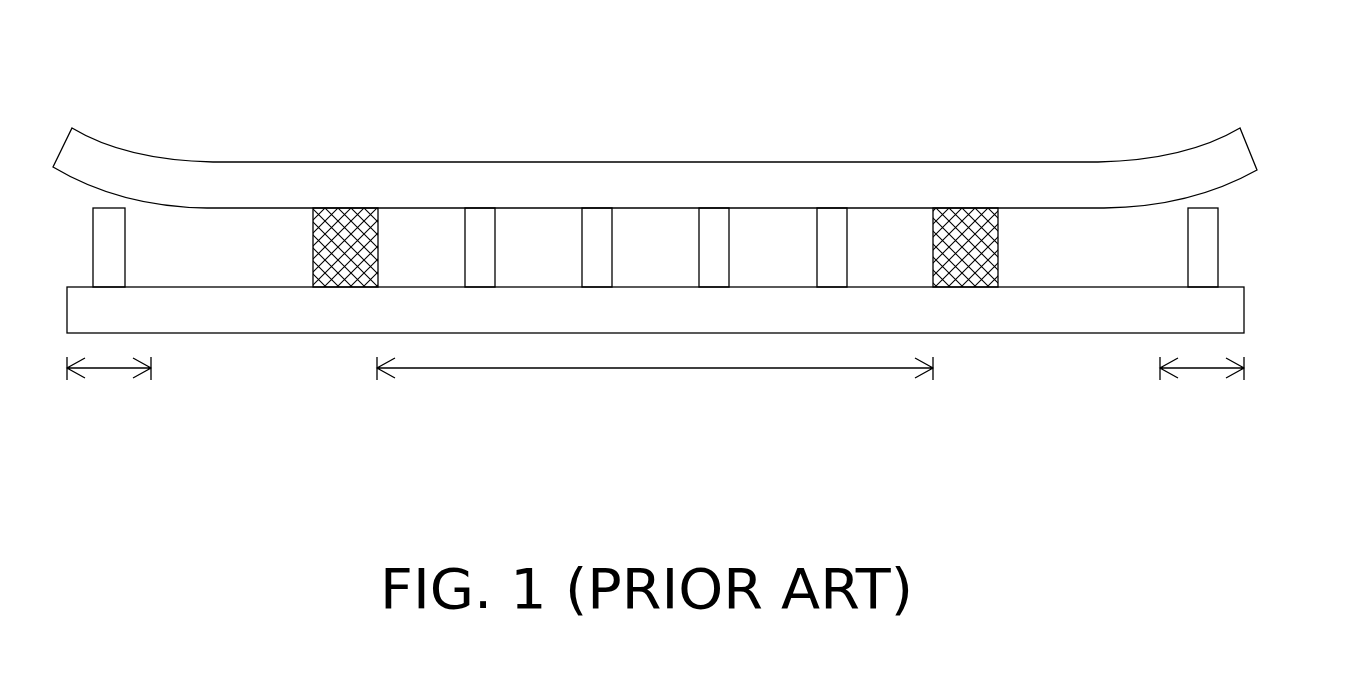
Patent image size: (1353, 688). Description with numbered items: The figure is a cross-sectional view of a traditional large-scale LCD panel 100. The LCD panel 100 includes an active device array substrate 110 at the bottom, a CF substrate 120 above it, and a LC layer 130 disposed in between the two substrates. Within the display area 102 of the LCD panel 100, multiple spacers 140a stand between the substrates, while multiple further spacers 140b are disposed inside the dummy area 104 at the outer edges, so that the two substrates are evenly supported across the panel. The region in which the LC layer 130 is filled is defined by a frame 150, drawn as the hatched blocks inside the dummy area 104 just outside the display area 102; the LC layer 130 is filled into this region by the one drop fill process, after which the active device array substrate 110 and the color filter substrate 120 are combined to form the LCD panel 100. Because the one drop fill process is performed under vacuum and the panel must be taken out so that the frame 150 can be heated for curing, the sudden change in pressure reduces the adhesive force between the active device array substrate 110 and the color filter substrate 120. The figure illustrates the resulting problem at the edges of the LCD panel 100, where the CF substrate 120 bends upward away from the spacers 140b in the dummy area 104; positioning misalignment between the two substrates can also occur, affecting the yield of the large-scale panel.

The LCD panel 100 is at (700, 280).
The display area 102 is at (649, 370).
The dummy area 104 is at (108, 370).
The active device array substrate 110 is at (1222, 313).
The CF substrate 120 is at (1228, 155).
The LC layer 130 is at (543, 233).
The spacers 140a is at (598, 270).
The spacers 140b is at (110, 225).
The frame 150 is at (347, 240).